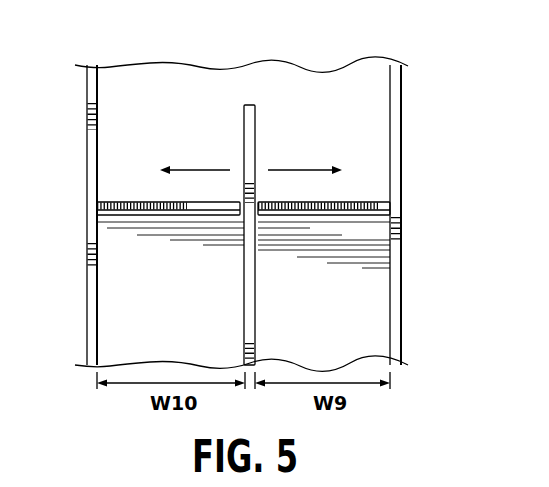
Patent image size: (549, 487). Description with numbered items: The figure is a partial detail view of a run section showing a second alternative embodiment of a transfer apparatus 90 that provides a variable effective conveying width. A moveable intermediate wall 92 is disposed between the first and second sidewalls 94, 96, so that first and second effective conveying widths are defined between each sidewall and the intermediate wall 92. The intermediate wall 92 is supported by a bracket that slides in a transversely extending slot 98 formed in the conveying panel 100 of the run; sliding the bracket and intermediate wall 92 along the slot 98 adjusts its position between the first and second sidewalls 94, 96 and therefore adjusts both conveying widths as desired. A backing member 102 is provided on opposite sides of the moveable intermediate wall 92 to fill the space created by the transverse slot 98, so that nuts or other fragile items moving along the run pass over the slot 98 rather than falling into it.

The transfer apparatus 90 is at (125, 38).
The moveable intermediate wall 92 is at (243, 116).
The first sidewall 94 is at (87, 178).
The second sidewall 96 is at (403, 135).
The transversely extending slot 98 is at (190, 203).
The conveying panel 100 is at (347, 331).
The backing member 102 is at (382, 210).